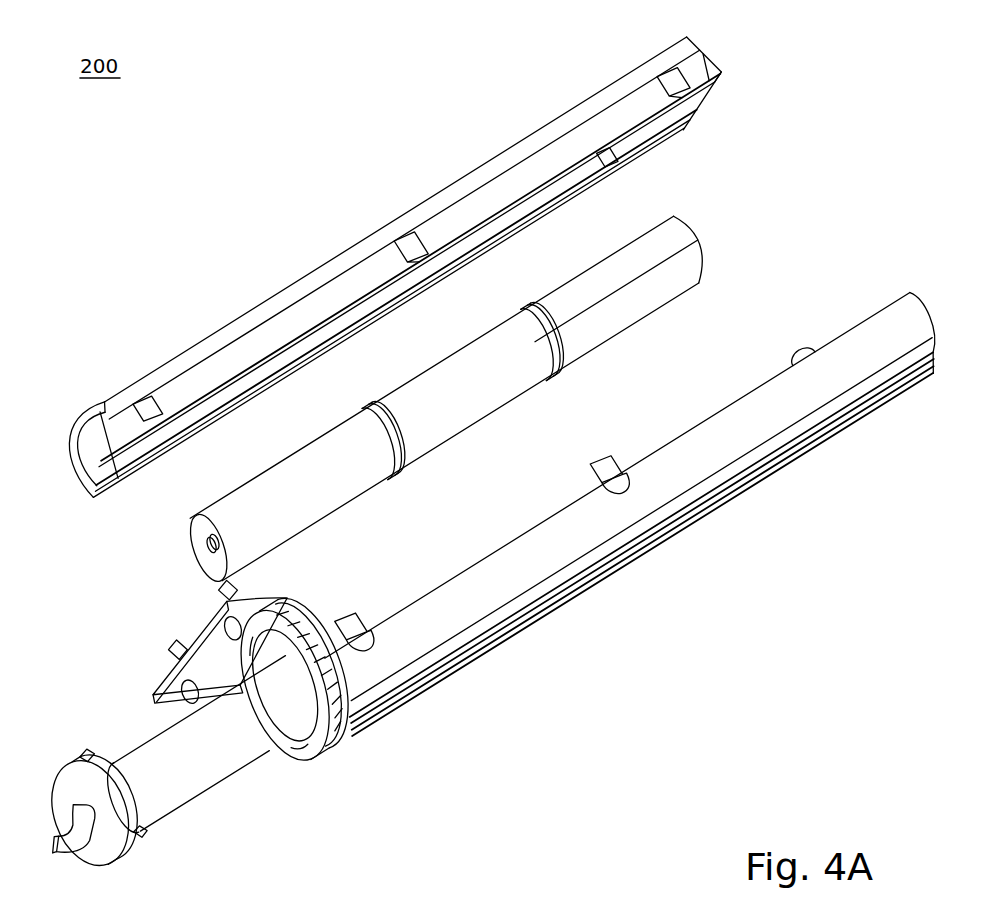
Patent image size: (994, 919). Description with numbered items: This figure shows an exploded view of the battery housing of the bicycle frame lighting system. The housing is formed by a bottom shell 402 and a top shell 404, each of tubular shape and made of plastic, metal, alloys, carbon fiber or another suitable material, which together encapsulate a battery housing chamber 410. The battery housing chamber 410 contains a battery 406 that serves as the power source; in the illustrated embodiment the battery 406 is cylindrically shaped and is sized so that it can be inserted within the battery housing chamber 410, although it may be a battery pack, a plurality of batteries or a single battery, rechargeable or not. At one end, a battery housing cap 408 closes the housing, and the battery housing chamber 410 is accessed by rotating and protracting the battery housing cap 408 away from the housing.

The bottom shell 402 is at (827, 387).
The top shell 404 is at (677, 50).
The battery 406 is at (695, 250).
The battery housing cap 408 is at (62, 790).
The battery housing chamber 410 is at (193, 778).